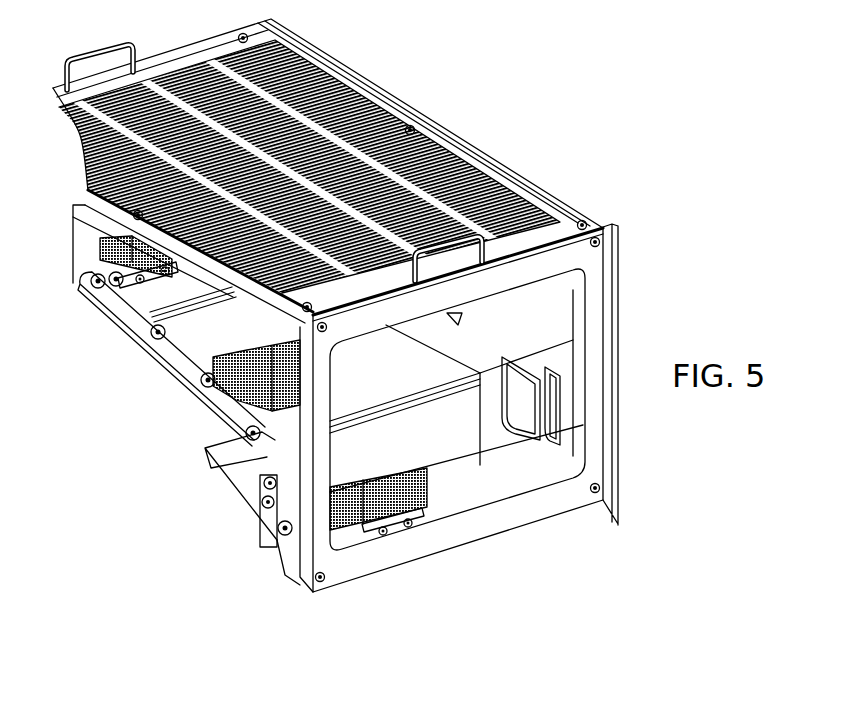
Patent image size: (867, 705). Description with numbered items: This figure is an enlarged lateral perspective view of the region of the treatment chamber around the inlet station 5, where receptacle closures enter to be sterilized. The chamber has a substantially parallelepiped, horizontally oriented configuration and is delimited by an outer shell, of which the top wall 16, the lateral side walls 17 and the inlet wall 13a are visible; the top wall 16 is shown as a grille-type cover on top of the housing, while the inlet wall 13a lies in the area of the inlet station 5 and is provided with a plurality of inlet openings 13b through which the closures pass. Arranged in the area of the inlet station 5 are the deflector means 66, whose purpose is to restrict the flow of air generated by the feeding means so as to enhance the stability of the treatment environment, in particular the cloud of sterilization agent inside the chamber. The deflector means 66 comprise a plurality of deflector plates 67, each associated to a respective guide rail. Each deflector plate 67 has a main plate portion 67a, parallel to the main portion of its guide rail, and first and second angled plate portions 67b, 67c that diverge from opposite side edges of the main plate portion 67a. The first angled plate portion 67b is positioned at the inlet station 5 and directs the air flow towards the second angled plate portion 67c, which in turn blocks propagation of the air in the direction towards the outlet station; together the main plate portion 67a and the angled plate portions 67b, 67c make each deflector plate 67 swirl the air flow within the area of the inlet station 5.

The inlet station 5 is at (458, 362).
The inlet wall 13a is at (544, 323).
The inlet openings 13b is at (521, 420).
The top wall 16 is at (187, 62).
The lateral side walls 17 is at (559, 507).
The deflector means 66 is at (528, 550).
The deflector plate 67 is at (564, 0).
The main plate portion 67a is at (130, 266).
The first angled plate portion 67b is at (300, 373).
The second angled plate portion 67c is at (118, 252).